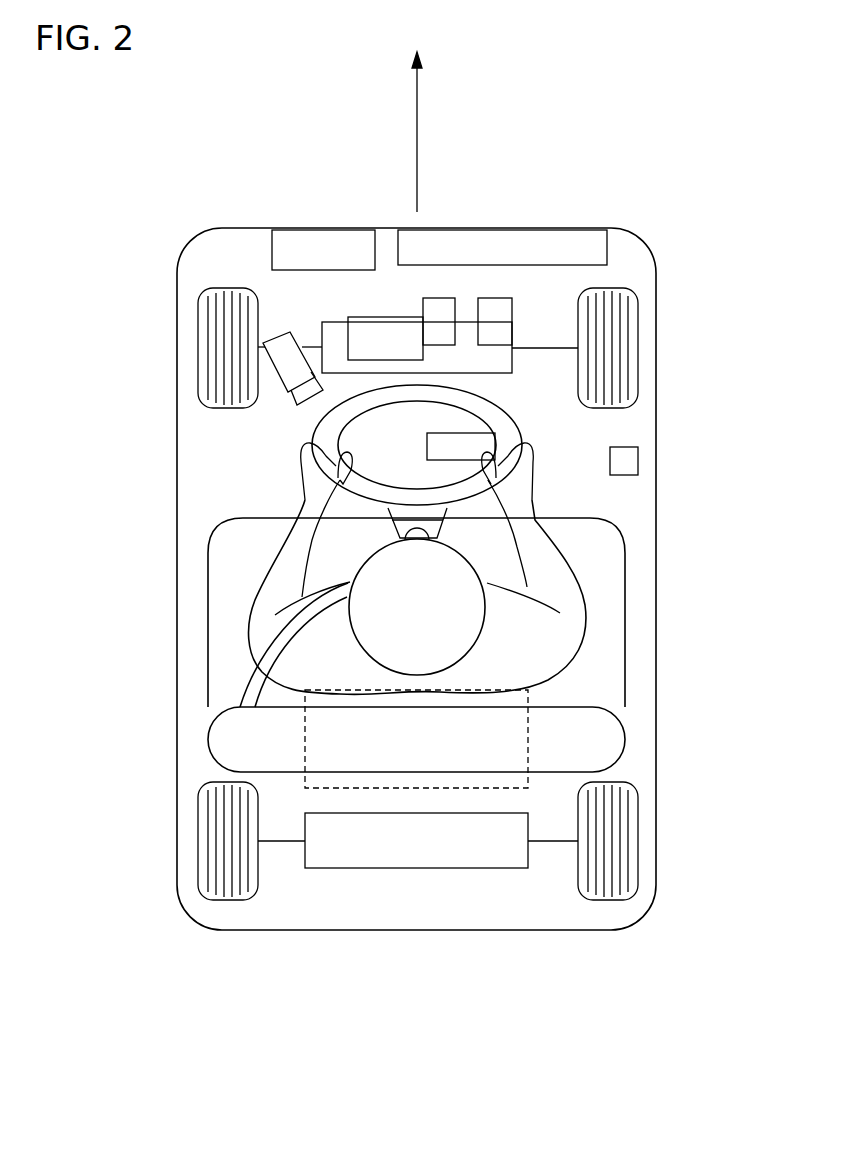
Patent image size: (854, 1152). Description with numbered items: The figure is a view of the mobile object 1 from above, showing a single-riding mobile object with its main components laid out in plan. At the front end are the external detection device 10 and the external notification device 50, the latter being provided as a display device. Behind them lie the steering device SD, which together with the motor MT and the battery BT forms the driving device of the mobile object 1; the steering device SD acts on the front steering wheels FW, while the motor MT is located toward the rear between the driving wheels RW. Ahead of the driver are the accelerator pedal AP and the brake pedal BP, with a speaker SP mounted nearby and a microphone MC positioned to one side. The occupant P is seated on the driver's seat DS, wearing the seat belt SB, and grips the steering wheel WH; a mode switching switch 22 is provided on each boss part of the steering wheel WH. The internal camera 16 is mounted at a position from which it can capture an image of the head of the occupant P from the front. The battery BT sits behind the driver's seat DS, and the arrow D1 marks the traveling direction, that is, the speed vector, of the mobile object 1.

The mobile object 1 is at (656, 580).
The arrow D1 is at (436, 132).
The external detection device 10 is at (321, 230).
The external notification device 50 is at (607, 247).
The internal camera 16 is at (270, 347).
The steering device SD is at (512, 362).
The speaker SP is at (397, 317).
The brake pedal BP is at (440, 298).
The accelerator pedal AP is at (495, 298).
The steering wheel FW is at (638, 345).
The driving wheel RW is at (638, 839).
The motor MT is at (417, 868).
The microphone MC is at (638, 460).
The steering wheel WH is at (320, 423).
The mode switching switch 22 is at (492, 435).
The driver's seat DS is at (210, 618).
The battery BT is at (528, 735).
The occupant P is at (586, 645).
The seat belt SB is at (243, 690).